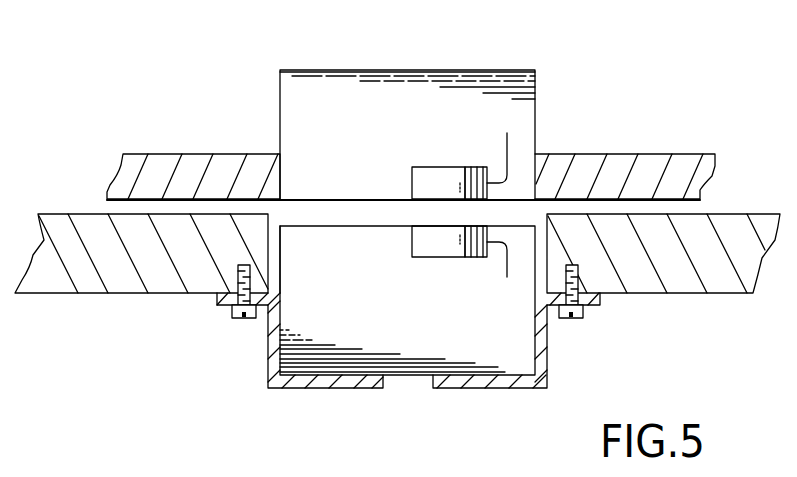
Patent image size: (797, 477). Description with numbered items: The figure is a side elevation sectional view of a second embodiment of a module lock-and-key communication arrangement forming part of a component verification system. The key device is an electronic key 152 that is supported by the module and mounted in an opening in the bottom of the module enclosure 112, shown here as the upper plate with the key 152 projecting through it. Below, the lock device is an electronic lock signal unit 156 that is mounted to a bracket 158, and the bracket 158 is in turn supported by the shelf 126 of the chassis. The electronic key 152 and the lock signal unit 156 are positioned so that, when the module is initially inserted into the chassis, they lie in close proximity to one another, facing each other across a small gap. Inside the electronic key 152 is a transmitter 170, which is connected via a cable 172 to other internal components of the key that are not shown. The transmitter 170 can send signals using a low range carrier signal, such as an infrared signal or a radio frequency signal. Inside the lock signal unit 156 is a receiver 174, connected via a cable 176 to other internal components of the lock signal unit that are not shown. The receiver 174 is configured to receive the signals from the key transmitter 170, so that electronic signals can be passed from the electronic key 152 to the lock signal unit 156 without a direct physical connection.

The module enclosure 112 is at (187, 154).
The shelf 126 is at (97, 294).
The electronic key 152 is at (458, 70).
The lock signal unit 156 is at (497, 342).
The bracket 158 is at (268, 360).
The transmitter 170 is at (433, 167).
The cable 172 is at (503, 151).
The receiver 174 is at (433, 258).
The cable 176 is at (498, 264).